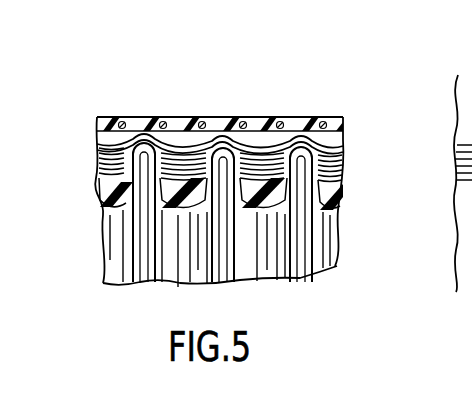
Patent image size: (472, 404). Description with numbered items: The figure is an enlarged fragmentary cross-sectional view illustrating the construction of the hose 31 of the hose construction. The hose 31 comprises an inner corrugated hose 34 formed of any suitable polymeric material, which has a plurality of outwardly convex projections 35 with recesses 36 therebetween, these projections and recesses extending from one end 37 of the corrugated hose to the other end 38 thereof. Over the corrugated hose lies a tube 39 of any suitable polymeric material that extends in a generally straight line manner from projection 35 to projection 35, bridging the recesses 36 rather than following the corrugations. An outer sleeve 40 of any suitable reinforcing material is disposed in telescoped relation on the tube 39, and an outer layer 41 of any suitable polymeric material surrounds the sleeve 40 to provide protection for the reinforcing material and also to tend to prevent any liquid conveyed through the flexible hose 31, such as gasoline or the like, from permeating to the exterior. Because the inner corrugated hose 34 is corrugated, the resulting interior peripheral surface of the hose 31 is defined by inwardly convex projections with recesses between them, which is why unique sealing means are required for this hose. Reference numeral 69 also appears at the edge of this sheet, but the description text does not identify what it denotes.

The hose 31 is at (318, 118).
The inner corrugated hose 34 is at (256, 218).
The outwardly convex projections 35 is at (140, 117).
The recesses 36 is at (177, 117).
The one end 37 is at (92, 178).
The other end 38 is at (353, 166).
The tube 39 is at (300, 118).
The outer sleeve 40 is at (122, 118).
The outer layer 41 is at (203, 117).
The adjacent wall 69 is at (460, 157).